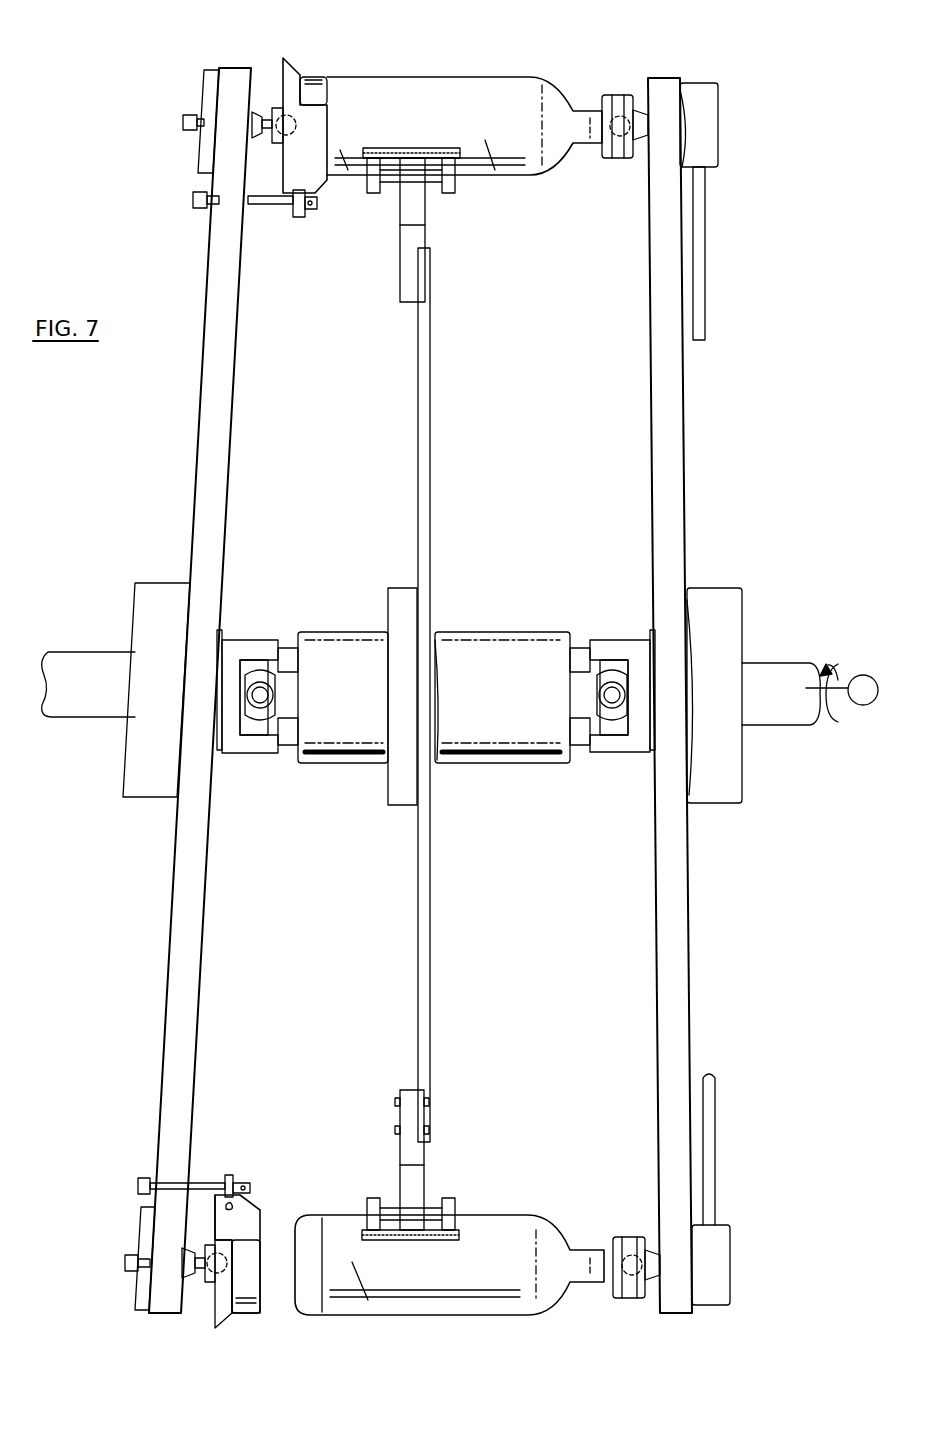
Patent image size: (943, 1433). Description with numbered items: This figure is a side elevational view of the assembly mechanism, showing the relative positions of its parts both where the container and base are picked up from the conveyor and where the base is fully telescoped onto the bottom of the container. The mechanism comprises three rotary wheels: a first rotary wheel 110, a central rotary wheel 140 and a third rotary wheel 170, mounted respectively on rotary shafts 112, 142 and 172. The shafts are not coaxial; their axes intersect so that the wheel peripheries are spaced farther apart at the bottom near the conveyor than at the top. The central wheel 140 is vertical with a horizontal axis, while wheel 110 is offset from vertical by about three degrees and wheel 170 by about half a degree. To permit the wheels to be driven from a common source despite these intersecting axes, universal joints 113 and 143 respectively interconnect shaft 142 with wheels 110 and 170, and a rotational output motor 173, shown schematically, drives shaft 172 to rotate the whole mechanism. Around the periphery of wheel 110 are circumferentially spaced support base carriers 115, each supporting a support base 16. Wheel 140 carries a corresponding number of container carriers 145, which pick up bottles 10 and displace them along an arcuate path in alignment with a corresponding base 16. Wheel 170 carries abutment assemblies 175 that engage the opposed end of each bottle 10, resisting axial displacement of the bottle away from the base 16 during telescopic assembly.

The bottle 10 is at (524, 178).
The support base 16 is at (312, 72).
The rotary wheel 110 is at (193, 923).
The rotary shaft 112 is at (102, 698).
The universal joint 113 is at (262, 754).
The support base carrier 115 is at (278, 45).
The central rotary wheel 140 is at (430, 957).
The rotary shaft 142 is at (516, 704).
The universal joint 143 is at (613, 753).
The container carrier 145 is at (447, 230).
The third rotary wheel 170 is at (683, 933).
The rotary shaft 172 is at (796, 704).
The rotational output motor 173 is at (863, 706).
The abutment assembly 175 is at (681, 70).